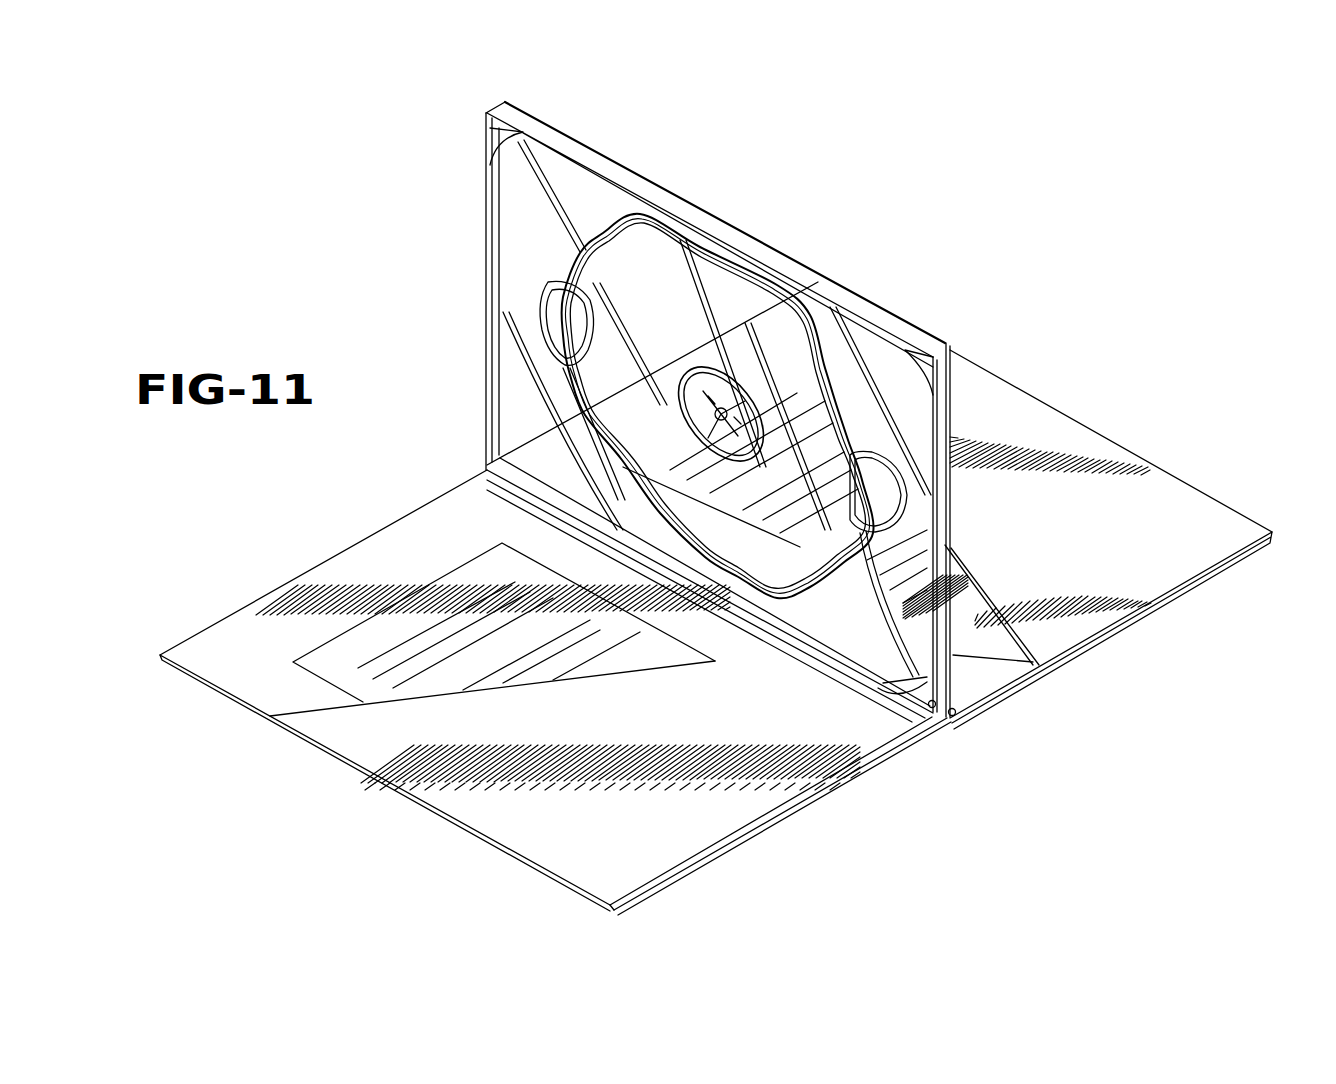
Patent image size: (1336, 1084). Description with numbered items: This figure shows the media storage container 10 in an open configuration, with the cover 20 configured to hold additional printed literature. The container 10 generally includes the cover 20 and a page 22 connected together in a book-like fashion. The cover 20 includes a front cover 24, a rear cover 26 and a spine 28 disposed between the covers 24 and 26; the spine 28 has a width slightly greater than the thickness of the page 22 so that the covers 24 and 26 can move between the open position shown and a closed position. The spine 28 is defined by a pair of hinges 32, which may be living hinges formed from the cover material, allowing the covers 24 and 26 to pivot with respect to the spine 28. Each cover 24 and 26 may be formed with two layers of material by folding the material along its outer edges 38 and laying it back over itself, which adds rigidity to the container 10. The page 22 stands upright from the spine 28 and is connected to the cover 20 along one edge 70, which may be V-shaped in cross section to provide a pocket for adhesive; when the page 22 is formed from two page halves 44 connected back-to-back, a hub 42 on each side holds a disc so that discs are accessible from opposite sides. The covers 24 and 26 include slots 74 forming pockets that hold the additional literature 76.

The media storage container 10 is at (950, 274).
The cover 20 is at (333, 558).
The page 22 is at (740, 228).
The front cover 24 is at (230, 643).
The rear cover 26 is at (1172, 505).
The spine 28 is at (955, 734).
The hinges 32 is at (953, 716).
The outer edges 38 is at (1042, 400).
The hub 42 is at (704, 380).
The page halves 44 is at (633, 166).
The edge 70 is at (858, 673).
The slots 74 is at (300, 716).
The additional literature 76 is at (425, 607).